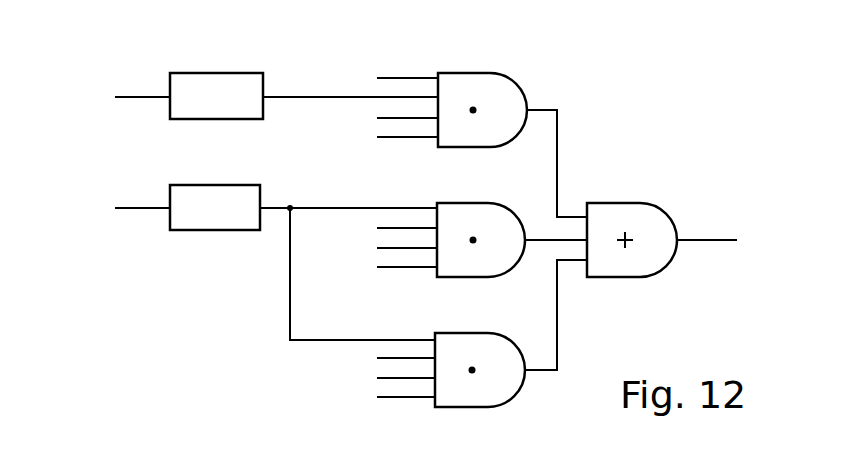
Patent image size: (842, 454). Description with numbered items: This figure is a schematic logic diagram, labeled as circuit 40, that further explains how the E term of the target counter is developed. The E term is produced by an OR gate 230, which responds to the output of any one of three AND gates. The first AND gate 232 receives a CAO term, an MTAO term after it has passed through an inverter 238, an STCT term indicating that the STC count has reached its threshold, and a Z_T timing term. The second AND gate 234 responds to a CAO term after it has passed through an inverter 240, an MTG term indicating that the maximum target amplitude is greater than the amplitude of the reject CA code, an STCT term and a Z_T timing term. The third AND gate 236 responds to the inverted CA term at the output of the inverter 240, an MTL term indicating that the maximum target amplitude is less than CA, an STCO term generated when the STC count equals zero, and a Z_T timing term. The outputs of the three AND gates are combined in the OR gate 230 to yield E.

The logic circuit 40 is at (580, 410).
The inverter 238 is at (240, 87).
The inverter 240 is at (240, 198).
The AND gate 232 is at (507, 88).
The AND gate 234 is at (495, 222).
The AND gate 236 is at (490, 353).
The OR gate 230 is at (642, 223).